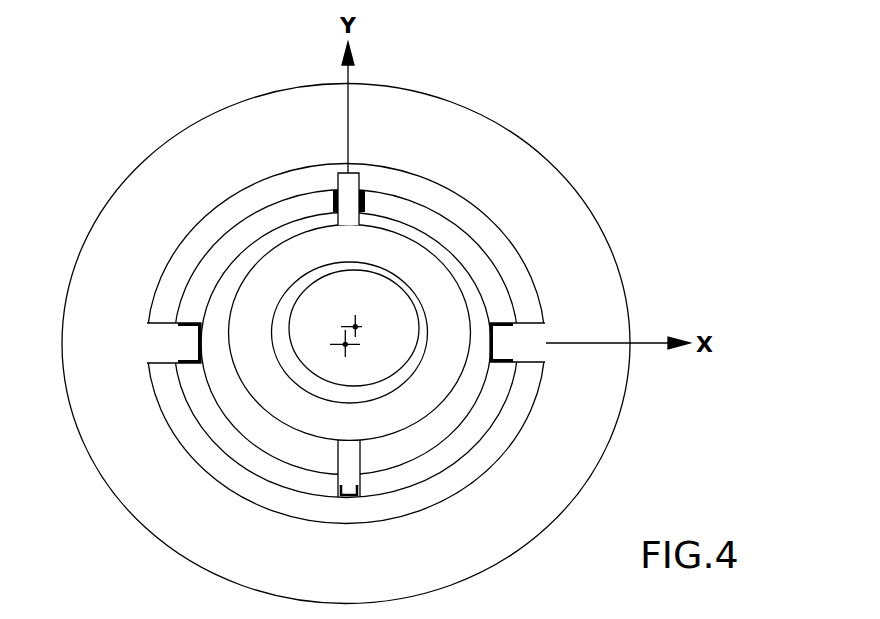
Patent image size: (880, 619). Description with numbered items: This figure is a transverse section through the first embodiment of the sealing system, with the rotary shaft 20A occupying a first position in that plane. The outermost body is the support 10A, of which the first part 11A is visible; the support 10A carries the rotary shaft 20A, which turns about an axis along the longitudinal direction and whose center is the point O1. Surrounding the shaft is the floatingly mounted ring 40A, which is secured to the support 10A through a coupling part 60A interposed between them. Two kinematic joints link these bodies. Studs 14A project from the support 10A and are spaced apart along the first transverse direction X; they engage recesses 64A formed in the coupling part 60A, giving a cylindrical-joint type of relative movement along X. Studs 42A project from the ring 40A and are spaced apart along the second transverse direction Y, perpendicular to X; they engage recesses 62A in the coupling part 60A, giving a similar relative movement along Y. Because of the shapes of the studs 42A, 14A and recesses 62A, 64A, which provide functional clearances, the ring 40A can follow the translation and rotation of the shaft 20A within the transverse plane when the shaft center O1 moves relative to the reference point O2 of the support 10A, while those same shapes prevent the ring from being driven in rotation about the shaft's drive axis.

The support 10A is at (346, 344).
The first part of the support 11A is at (500, 152).
The studs 14A is at (178, 346).
The rotary shaft 20A is at (348, 310).
The ring 40A is at (412, 400).
The studs 42A is at (337, 179).
The coupling part 60A is at (487, 263).
The recesses 62A is at (363, 201).
The recesses 64A is at (204, 342).
The center of the rotary shaft O1 is at (366, 320).
The reference point of the support O2 is at (336, 351).